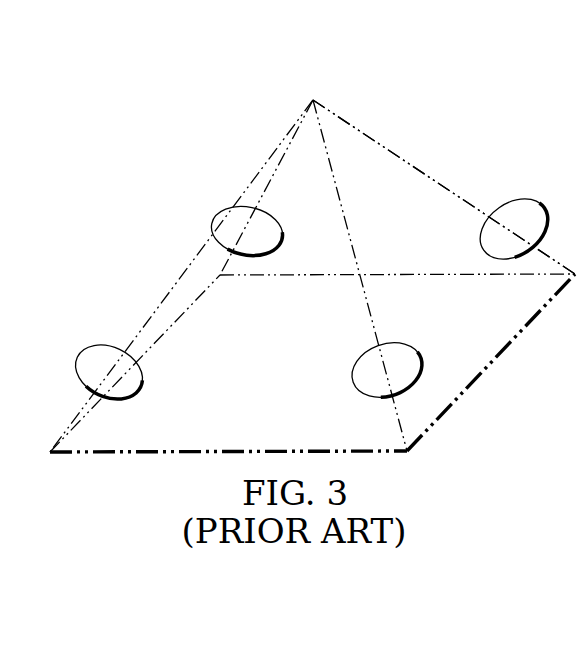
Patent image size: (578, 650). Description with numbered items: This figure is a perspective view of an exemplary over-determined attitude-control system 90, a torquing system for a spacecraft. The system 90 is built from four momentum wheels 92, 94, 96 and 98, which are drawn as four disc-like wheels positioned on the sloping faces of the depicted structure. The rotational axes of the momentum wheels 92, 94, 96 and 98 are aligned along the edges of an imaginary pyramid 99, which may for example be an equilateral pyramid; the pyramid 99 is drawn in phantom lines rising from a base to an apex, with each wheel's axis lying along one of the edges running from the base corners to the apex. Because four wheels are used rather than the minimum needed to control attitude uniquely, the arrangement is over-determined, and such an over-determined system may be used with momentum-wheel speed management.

The over-determined attitude-control system 90 is at (500, 168).
The momentum wheel 92 is at (222, 208).
The momentum wheel 94 is at (90, 343).
The momentum wheel 96 is at (415, 347).
The momentum wheel 98 is at (528, 202).
The imaginary pyramid 99 is at (367, 133).